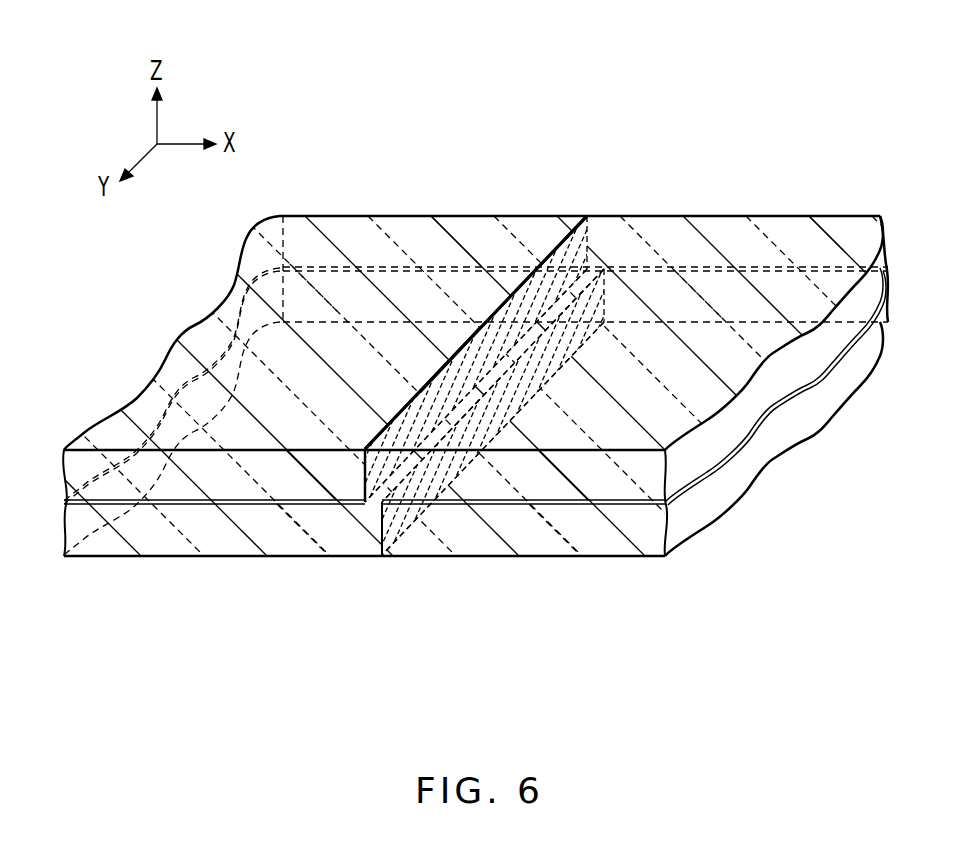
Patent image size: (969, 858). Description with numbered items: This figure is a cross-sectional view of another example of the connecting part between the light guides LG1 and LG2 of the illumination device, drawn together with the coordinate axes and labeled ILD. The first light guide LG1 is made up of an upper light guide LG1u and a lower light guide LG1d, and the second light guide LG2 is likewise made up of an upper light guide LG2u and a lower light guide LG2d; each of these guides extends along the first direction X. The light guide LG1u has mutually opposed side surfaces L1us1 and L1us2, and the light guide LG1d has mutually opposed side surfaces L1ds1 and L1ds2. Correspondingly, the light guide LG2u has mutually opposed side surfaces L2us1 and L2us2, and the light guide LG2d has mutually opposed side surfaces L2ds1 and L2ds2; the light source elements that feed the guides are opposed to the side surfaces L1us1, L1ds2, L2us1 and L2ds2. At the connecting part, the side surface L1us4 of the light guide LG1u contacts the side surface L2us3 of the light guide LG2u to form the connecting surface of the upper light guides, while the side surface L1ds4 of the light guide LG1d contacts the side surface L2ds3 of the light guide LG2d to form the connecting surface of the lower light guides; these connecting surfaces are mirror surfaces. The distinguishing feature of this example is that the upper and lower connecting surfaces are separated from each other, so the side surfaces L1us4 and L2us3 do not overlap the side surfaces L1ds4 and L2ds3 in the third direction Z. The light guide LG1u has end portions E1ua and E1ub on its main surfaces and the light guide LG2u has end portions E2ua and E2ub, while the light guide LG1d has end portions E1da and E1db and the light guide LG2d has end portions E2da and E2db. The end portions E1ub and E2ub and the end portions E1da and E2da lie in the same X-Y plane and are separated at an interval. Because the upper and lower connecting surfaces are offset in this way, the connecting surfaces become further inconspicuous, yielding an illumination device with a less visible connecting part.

The interlayer dielectric ILD is at (752, 64).
The light guide LG1 is at (92, 579).
The light guide LG1u is at (195, 478).
The light guide LG1d is at (202, 536).
The light guide LG2 is at (408, 579).
The light guide LG2u is at (510, 478).
The light guide LG2d is at (513, 536).
The side surface L1us1 is at (424, 238).
The side surface L1ds1 is at (348, 292).
The side surface L1us2 is at (327, 478).
The side surface L1ds2 is at (333, 536).
The side surface L1us4 is at (467, 383).
The side surface L1ds4 is at (468, 438).
The side surface L2us1 is at (803, 240).
The side surface L2ds1 is at (727, 295).
The side surface L2us2 is at (633, 478).
The side surface L2ds2 is at (640, 536).
The side surface L2us3 is at (575, 258).
The side surface L2ds3 is at (567, 342).
The end portion E1ua is at (530, 272).
The end portion E2ua is at (476, 332).
The end portion E1ub is at (497, 318).
The end portion E2ub is at (476, 385).
The end portion E1da is at (540, 368).
The end portion E2da is at (493, 385).
The end portion E1db is at (525, 405).
The end portion E2db is at (493, 438).